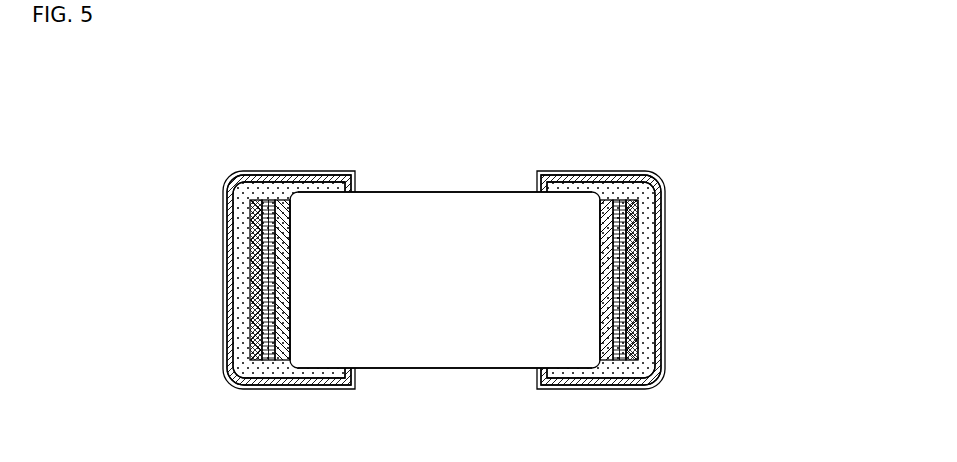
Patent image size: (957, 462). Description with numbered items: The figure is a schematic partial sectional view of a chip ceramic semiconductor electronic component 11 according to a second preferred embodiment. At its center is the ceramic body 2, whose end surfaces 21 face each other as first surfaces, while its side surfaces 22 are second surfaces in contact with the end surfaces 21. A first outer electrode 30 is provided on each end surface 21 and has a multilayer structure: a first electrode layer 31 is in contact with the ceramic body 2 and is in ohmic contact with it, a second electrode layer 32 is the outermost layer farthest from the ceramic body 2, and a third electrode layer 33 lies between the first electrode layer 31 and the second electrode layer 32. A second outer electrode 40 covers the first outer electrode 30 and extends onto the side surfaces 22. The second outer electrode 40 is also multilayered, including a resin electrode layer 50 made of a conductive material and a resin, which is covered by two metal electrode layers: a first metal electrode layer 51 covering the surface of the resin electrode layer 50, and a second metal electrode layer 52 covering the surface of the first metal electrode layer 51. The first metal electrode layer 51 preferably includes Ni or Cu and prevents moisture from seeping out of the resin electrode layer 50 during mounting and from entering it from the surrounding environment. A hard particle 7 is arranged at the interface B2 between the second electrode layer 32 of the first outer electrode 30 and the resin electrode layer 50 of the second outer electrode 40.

The chip ceramic semiconductor electronic component 11 is at (601, 136).
The ceramic body 2 is at (453, 205).
The end surface 21 is at (289, 221).
The side surface 22 is at (402, 192).
The first outer electrode 30 is at (375, 280).
The first electrode layer 31 is at (280, 238).
The second electrode layer 32 is at (168, 213).
The third electrode layer 33 is at (270, 272).
The second outer electrode 40 is at (506, 280).
The resin electrode layer 50 is at (739, 365).
The first metal electrode layer 51 is at (660, 312).
The second metal electrode layer 52 is at (665, 338).
The hard particle 7 is at (638, 212).
The interface B2 is at (638, 224).